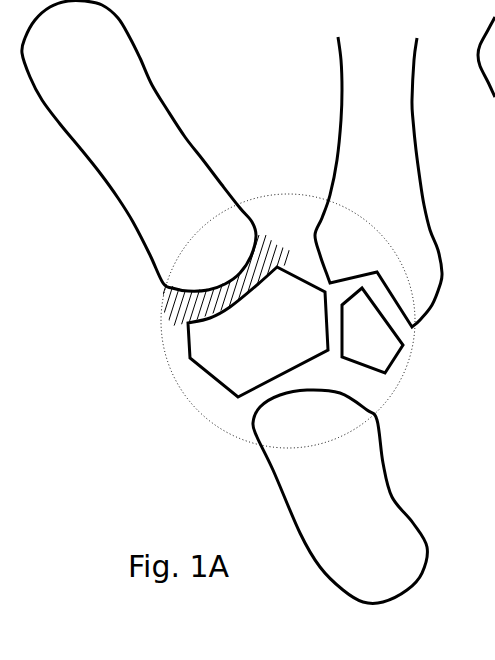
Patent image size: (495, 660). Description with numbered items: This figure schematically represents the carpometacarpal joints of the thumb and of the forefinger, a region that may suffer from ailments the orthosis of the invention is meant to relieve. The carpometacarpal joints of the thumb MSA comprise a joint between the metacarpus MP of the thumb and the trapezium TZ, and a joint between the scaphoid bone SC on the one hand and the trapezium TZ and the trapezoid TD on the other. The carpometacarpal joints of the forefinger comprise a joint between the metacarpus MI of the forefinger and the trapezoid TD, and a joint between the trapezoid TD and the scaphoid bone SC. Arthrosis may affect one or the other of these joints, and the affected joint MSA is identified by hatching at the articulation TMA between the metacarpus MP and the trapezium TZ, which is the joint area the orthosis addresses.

The metacarpus of the thumb MP is at (107, 60).
The metacarpus of the forefinger MI is at (355, 60).
The trapeziometacarpal articulation (joint) TMA is at (163, 313).
The trapezium TZ is at (227, 368).
The trapezoid TD is at (387, 338).
The carpometacarpal joints of the thumb MSA is at (213, 425).
The scaphoid bone SC is at (372, 478).